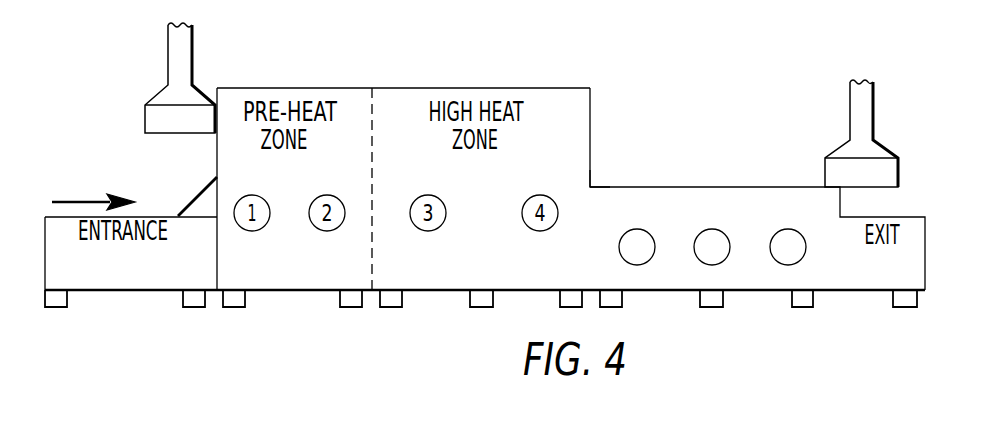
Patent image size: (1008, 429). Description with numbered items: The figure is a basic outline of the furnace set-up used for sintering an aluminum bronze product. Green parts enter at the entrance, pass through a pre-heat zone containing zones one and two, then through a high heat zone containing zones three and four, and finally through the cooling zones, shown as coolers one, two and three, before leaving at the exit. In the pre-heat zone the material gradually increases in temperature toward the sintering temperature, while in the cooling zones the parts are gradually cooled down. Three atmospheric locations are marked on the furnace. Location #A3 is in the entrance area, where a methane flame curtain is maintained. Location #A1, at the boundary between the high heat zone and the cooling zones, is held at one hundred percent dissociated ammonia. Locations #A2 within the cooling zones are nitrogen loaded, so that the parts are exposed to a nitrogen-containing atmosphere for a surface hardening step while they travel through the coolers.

The location # A1 is at (601, 178).
The locations # A2 is at (811, 168).
The location # A3 is at (170, 196).